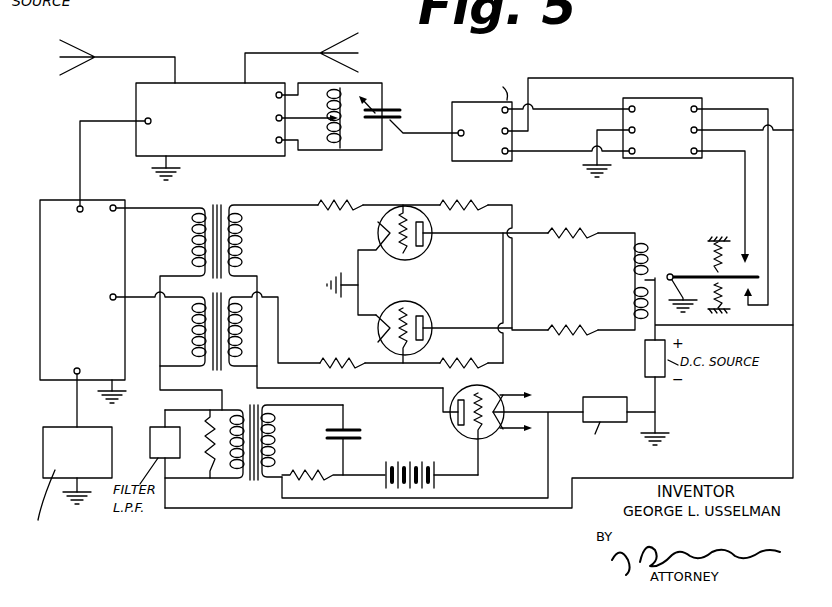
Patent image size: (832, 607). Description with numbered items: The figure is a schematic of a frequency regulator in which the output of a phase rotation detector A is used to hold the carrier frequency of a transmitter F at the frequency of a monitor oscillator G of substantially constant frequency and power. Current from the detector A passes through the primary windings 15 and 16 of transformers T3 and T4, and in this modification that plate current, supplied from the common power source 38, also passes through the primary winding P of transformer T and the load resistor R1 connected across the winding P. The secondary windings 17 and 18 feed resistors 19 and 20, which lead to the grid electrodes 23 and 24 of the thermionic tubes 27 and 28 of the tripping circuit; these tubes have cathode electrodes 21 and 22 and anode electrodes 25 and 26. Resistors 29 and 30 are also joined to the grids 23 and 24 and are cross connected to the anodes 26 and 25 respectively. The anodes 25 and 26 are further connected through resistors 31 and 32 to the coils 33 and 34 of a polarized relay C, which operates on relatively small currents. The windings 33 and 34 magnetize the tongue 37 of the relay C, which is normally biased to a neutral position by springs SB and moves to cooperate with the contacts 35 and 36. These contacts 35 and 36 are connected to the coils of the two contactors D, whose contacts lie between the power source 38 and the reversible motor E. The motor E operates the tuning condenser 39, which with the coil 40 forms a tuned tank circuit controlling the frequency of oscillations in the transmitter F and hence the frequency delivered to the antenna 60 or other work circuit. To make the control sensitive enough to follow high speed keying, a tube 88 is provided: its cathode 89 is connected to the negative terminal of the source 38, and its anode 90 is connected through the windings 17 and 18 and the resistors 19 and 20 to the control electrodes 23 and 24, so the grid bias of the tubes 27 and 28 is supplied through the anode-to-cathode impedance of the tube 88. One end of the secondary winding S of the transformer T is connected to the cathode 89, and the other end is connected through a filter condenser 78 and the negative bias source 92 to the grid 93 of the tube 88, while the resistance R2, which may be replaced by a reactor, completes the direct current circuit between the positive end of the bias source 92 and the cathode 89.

The work circuit 60 is at (166, 54).
The tuning condenser 39 is at (388, 108).
The coil 40 is at (334, 144).
The transmitter F is at (210, 119).
The reversible motor E is at (479, 122).
The pair of contactors D is at (659, 140).
The polarized relay C is at (729, 271).
The phase rotation detector A is at (83, 301).
The monitor oscillator G is at (65, 502).
The contact 36 is at (744, 259).
The contact 35 is at (732, 217).
The tongue 37 is at (700, 275).
The springs SB is at (733, 252).
The transformer T4 is at (279, 298).
The transformer T3 is at (218, 340).
The primary winding 16 is at (191, 249).
The secondary winding 18 is at (243, 258).
The primary winding 15 is at (192, 317).
The secondary winding 17 is at (243, 352).
The resistor 20 is at (336, 203).
The resistor 30 is at (462, 204).
The resistor 19 is at (343, 356).
The resistor 29 is at (473, 356).
The cathode electrode 22 is at (404, 247).
The grid electrode 24 is at (400, 212).
The anode electrode 26 is at (426, 228).
The thermionic tube 28 is at (427, 250).
The cathode electrode 21 is at (406, 326).
The grid electrode 23 is at (400, 311).
The anode electrode 25 is at (426, 323).
The thermionic tube 27 is at (412, 310).
The resistor 32 is at (559, 232).
The resistor 31 is at (565, 332).
The relay coil 34 is at (645, 245).
The relay coil 33 is at (642, 325).
The tube 88 is at (480, 422).
The cathode electrode 89 is at (497, 434).
The anode 90 is at (456, 425).
The negative bias source 92 is at (408, 450).
The grid 93 is at (476, 433).
The capacitor 78 is at (357, 440).
The power source 38 is at (609, 396).
The load resistor R1 is at (203, 420).
The resistance R2 is at (322, 469).
The transformer T is at (254, 451).
The primary winding P is at (233, 420).
The secondary winding S is at (282, 456).